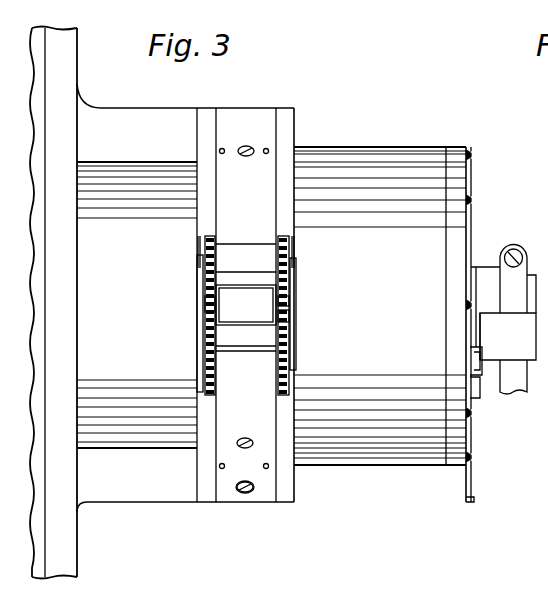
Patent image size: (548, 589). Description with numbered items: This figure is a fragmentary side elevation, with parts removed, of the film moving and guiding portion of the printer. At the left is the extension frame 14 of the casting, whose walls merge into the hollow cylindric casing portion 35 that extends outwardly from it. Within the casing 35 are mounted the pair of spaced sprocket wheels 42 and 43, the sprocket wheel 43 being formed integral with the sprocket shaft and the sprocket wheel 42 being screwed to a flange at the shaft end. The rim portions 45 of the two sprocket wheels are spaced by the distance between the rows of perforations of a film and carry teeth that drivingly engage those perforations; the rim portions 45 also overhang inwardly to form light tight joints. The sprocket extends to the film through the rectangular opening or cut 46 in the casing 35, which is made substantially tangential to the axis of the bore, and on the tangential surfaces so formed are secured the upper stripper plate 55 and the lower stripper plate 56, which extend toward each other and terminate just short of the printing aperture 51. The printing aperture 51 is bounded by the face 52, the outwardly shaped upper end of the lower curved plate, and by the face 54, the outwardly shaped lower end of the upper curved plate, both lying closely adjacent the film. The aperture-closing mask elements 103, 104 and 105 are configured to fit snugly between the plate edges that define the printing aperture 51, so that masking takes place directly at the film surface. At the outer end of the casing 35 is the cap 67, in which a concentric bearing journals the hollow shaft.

The extension frame 14 is at (69, 562).
The hollow cylindric casing portion 35 is at (143, 182).
The upper stripper plate 55 is at (237, 123).
The face of plate 53 54 is at (231, 290).
The printing aperture 51 is at (255, 321).
The face of plate 50 52 is at (265, 328).
The sprocket wheel 43 is at (206, 316).
The sprocket wheel 42 is at (287, 327).
The aperture-closing mask element 103 is at (203, 304).
The aperture-closing mask element 104 is at (288, 302).
The aperture-closing mask element 105 is at (288, 317).
The rim portions 45 is at (206, 272).
The rectangular opening or cut 46 is at (203, 338).
The cap 67 is at (466, 229).
The lower stripper plate 56 is at (234, 478).